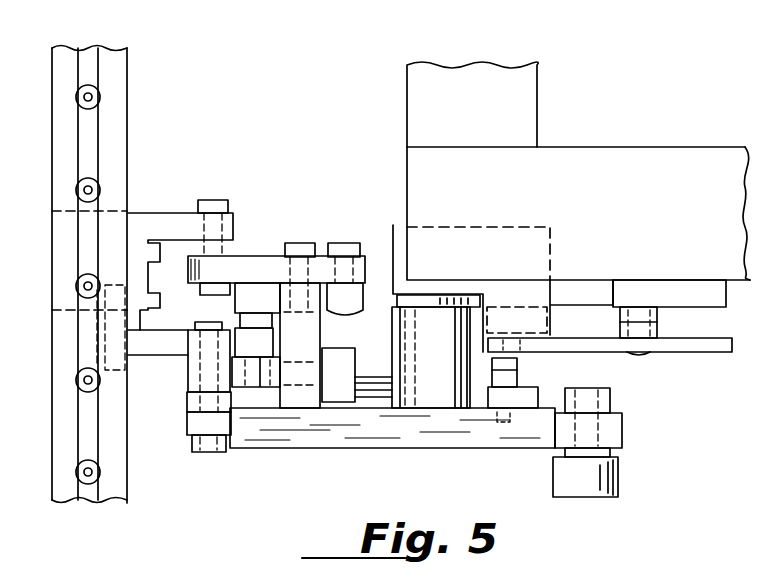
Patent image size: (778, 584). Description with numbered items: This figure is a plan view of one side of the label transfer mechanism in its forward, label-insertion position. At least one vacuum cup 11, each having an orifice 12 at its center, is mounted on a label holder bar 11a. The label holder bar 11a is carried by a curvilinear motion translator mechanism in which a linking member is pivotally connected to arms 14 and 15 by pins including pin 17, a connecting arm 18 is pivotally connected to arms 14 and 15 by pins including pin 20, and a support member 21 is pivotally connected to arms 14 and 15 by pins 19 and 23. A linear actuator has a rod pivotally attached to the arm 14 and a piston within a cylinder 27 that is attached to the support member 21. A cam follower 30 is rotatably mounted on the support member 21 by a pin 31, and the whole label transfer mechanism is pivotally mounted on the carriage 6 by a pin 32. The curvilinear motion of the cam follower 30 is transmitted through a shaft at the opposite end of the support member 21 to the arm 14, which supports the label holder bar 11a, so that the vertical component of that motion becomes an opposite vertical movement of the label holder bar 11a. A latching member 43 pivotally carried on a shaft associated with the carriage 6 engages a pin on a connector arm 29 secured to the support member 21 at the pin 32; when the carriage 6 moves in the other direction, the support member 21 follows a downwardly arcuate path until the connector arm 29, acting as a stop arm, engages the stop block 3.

The label holder bar 11a is at (113, 58).
The vacuum cup 11 is at (98, 97).
The orifice 12 is at (85, 190).
The pin 17 is at (229, 250).
The arm 15 is at (243, 264).
The pin 23 is at (298, 248).
The pin 20 is at (342, 248).
The connecting arm 18 is at (324, 315).
The arm 14 is at (150, 347).
The pin 19 is at (190, 401).
The support member 21 is at (284, 460).
The cylinder 27 is at (380, 388).
The pin 32 is at (442, 408).
The carriage 6 is at (648, 234).
The stop block 3 is at (553, 300).
The connector arm 29 is at (530, 327).
The latching member 43 is at (716, 350).
The pin 31 is at (609, 400).
The cam follower 30 is at (618, 470).